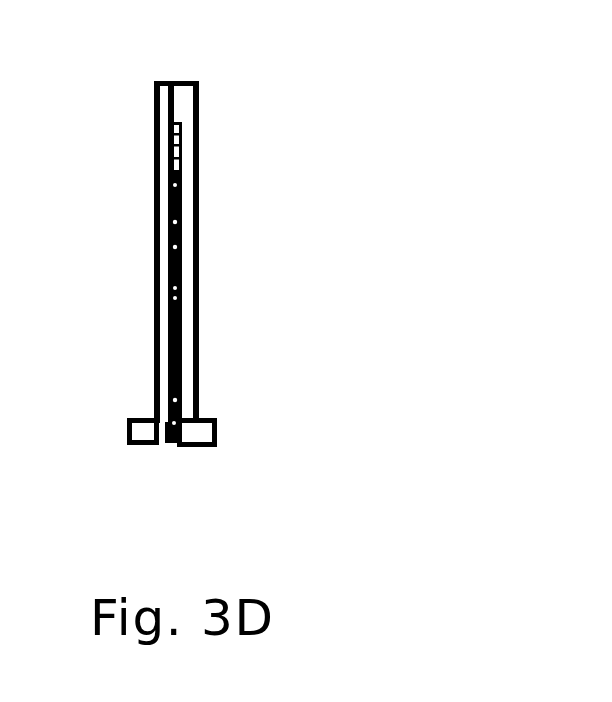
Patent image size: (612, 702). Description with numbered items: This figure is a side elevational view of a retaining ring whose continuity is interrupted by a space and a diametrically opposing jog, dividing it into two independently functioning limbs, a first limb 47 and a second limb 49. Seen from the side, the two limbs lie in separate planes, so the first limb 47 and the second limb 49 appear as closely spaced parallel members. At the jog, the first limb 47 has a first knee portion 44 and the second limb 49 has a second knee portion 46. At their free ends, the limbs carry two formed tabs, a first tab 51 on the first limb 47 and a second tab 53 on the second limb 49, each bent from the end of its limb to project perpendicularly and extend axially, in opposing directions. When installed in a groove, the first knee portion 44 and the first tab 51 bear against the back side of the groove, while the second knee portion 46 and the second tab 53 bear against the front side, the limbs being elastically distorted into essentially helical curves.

The first knee portion 44 is at (200, 97).
The second knee portion 46 is at (155, 105).
The first limb 47 is at (200, 310).
The second limb 49 is at (153, 310).
The first tab 51 is at (126, 432).
The second tab 53 is at (200, 431).